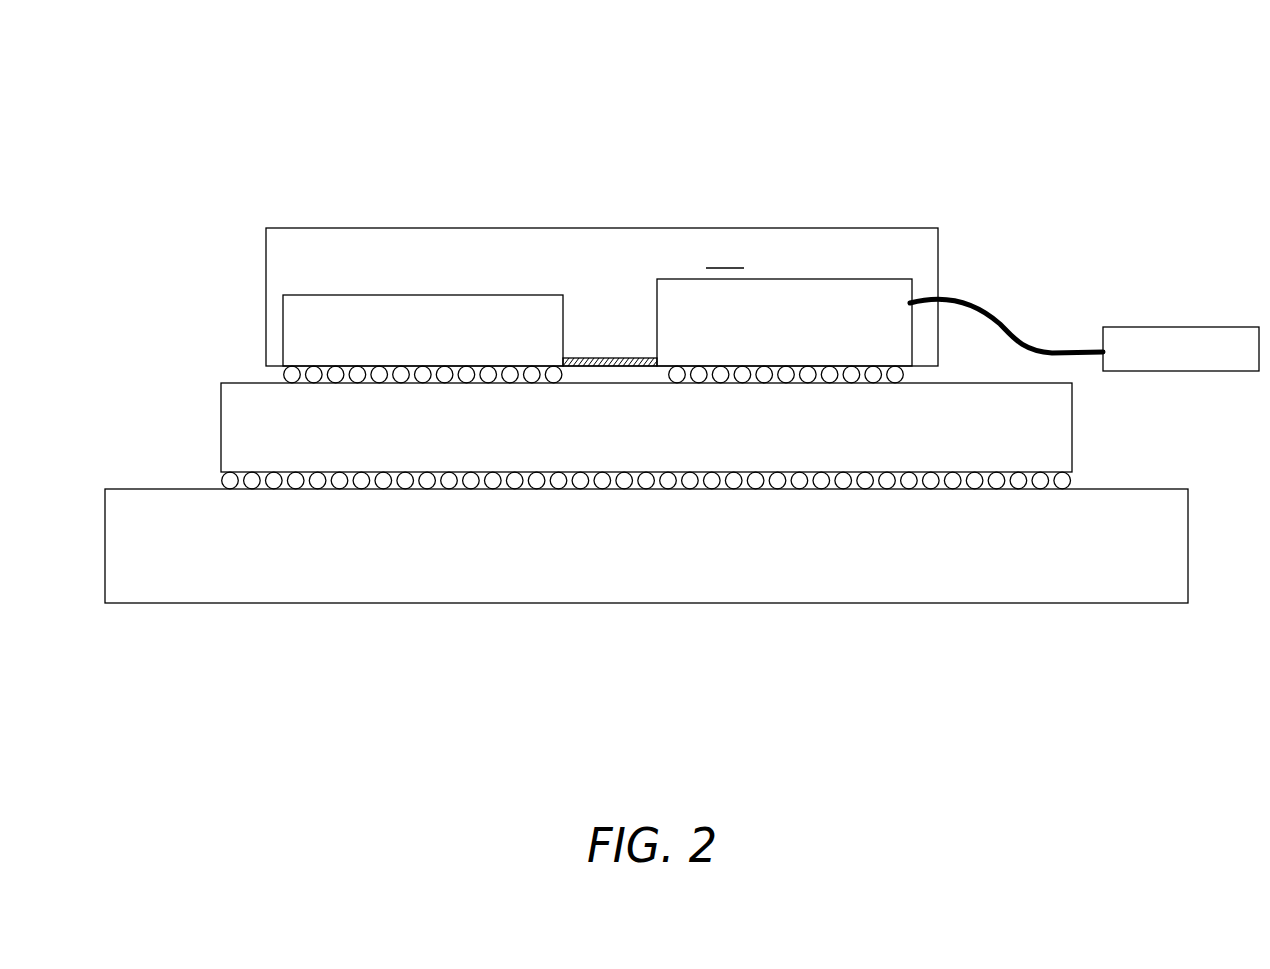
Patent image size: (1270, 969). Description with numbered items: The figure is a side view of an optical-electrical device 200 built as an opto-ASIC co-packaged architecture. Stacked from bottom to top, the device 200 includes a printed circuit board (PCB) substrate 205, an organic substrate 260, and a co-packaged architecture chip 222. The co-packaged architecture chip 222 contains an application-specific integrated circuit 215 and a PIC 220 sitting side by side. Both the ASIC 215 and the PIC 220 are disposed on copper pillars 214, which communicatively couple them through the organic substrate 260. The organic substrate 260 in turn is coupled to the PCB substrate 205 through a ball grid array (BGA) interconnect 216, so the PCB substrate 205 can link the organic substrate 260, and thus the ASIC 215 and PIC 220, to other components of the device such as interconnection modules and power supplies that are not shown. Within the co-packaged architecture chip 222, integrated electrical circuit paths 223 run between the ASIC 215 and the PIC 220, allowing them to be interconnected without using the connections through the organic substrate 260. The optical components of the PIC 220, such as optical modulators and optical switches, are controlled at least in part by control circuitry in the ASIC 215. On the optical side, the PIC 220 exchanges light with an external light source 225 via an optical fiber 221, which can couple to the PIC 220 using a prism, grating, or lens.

The optical-electrical device 200 is at (291, 125).
The co-packaged architecture chip 222 is at (602, 297).
The application-specific integrated circuit 215 is at (403, 359).
The PIC 220 is at (765, 354).
The integrated electrical circuit paths 223 is at (610, 344).
The copper pillars 214 is at (270, 371).
The organic substrate 260 is at (625, 458).
The ball grid array (BGA) interconnect 216 is at (198, 477).
The printed circuit board (PCB) substrate 205 is at (627, 578).
The optical fiber 221 is at (972, 300).
The external light source 225 is at (1161, 363).